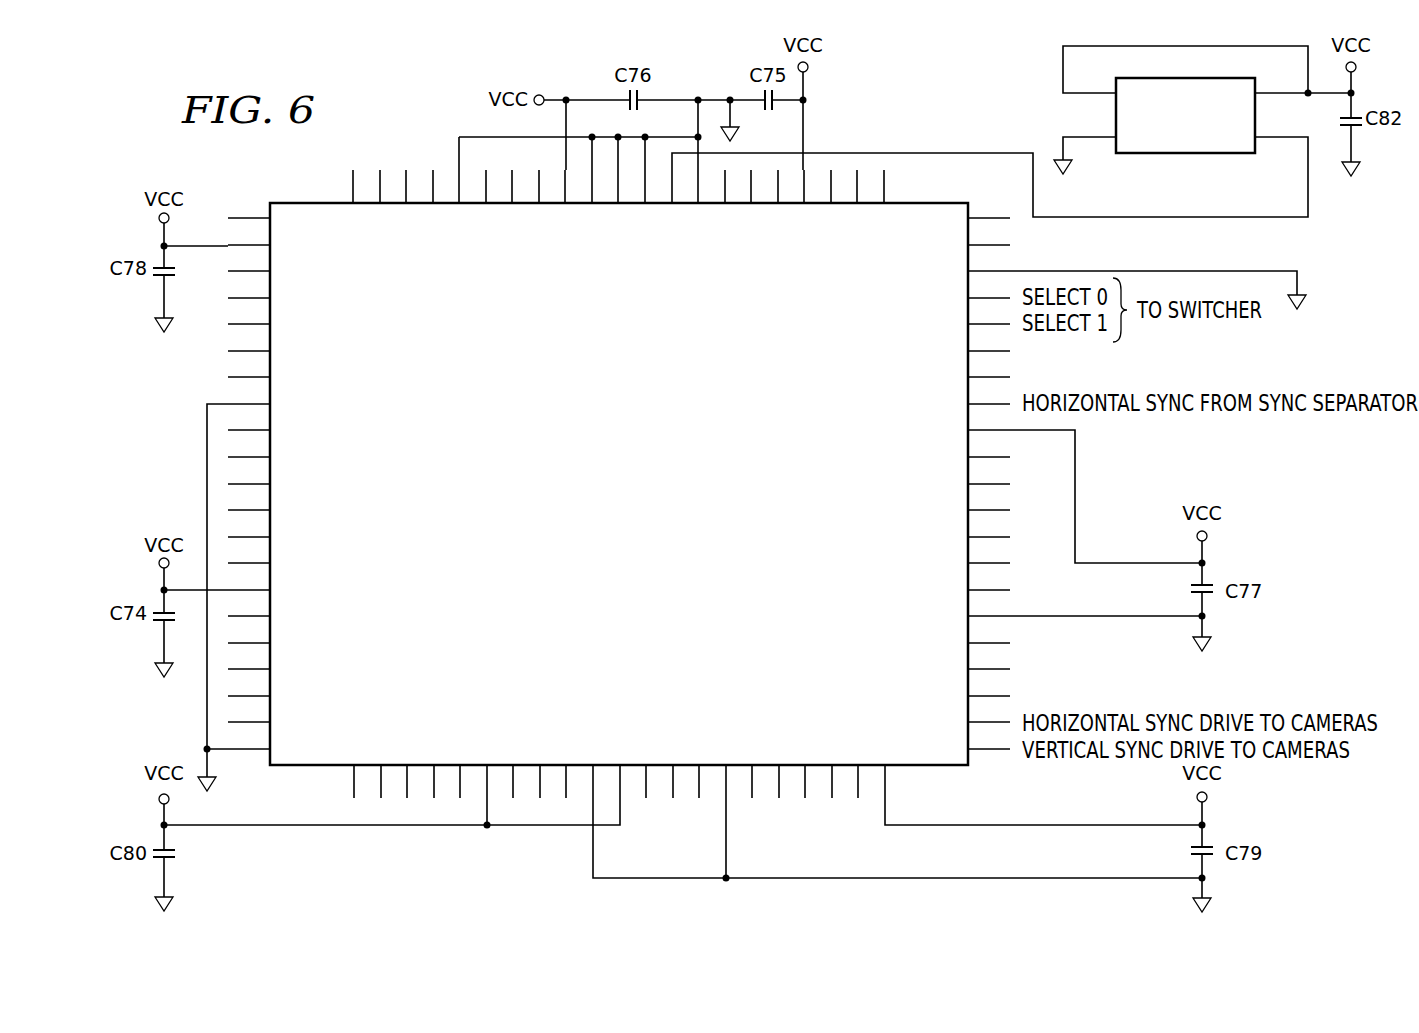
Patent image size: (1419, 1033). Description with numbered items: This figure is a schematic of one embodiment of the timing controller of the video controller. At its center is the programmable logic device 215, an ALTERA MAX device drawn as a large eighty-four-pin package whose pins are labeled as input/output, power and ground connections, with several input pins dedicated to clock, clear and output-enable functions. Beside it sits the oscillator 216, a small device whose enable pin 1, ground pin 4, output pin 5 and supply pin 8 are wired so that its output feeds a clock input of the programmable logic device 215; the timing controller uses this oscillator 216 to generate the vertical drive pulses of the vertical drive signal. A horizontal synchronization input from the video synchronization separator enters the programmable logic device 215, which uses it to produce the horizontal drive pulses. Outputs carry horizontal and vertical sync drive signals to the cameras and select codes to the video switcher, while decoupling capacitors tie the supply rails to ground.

The programmable logic device 215 is at (641, 494).
The oscillator 216 is at (1187, 154).
The U7 pin 1 NC/EN 1 is at (1185, 70).
The U7 pin 4 GND 4 is at (1085, 142).
The U7 pin 5 OUT 5 is at (990, 164).
The U7 pin 8 VCC 8 is at (1305, 83).